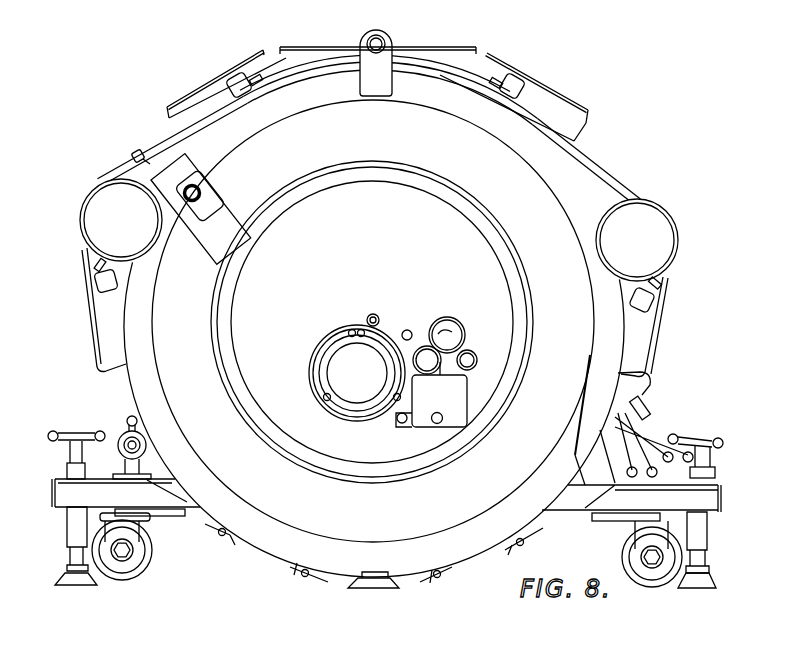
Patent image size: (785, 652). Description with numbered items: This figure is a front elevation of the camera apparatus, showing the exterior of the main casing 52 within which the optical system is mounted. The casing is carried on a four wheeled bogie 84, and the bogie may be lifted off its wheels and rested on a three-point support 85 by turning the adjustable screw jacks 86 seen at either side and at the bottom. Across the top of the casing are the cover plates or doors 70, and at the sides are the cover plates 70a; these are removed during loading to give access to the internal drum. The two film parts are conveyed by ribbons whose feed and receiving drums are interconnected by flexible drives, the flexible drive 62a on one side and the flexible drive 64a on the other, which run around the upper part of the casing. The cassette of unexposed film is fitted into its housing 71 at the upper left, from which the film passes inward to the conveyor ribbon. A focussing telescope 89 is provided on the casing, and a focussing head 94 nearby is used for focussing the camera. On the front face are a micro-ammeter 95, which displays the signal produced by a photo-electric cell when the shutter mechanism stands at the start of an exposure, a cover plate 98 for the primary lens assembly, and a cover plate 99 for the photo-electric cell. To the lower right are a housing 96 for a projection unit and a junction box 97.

The main casing 52 is at (473, 537).
The flexible drive 62a is at (169, 141).
The flexible drive 64a is at (586, 154).
The cover plates or doors 70 is at (246, 58).
The cover plates 70a is at (90, 333).
The housing 71 is at (113, 200).
The focussing telescope 89 is at (147, 167).
The focussing head 94 is at (201, 190).
The cover plate for the primary lens assembly 98 is at (348, 357).
The cover plate for the photo-electric cell 99 is at (424, 344).
The micro-ammeter 95 is at (451, 329).
The four wheeled bogie 84 is at (66, 492).
The three-point support 85 is at (58, 578).
The adjustable screw jacks 86 is at (53, 433).
The junction box 97 is at (677, 467).
The housing for a projection unit 96 is at (608, 447).